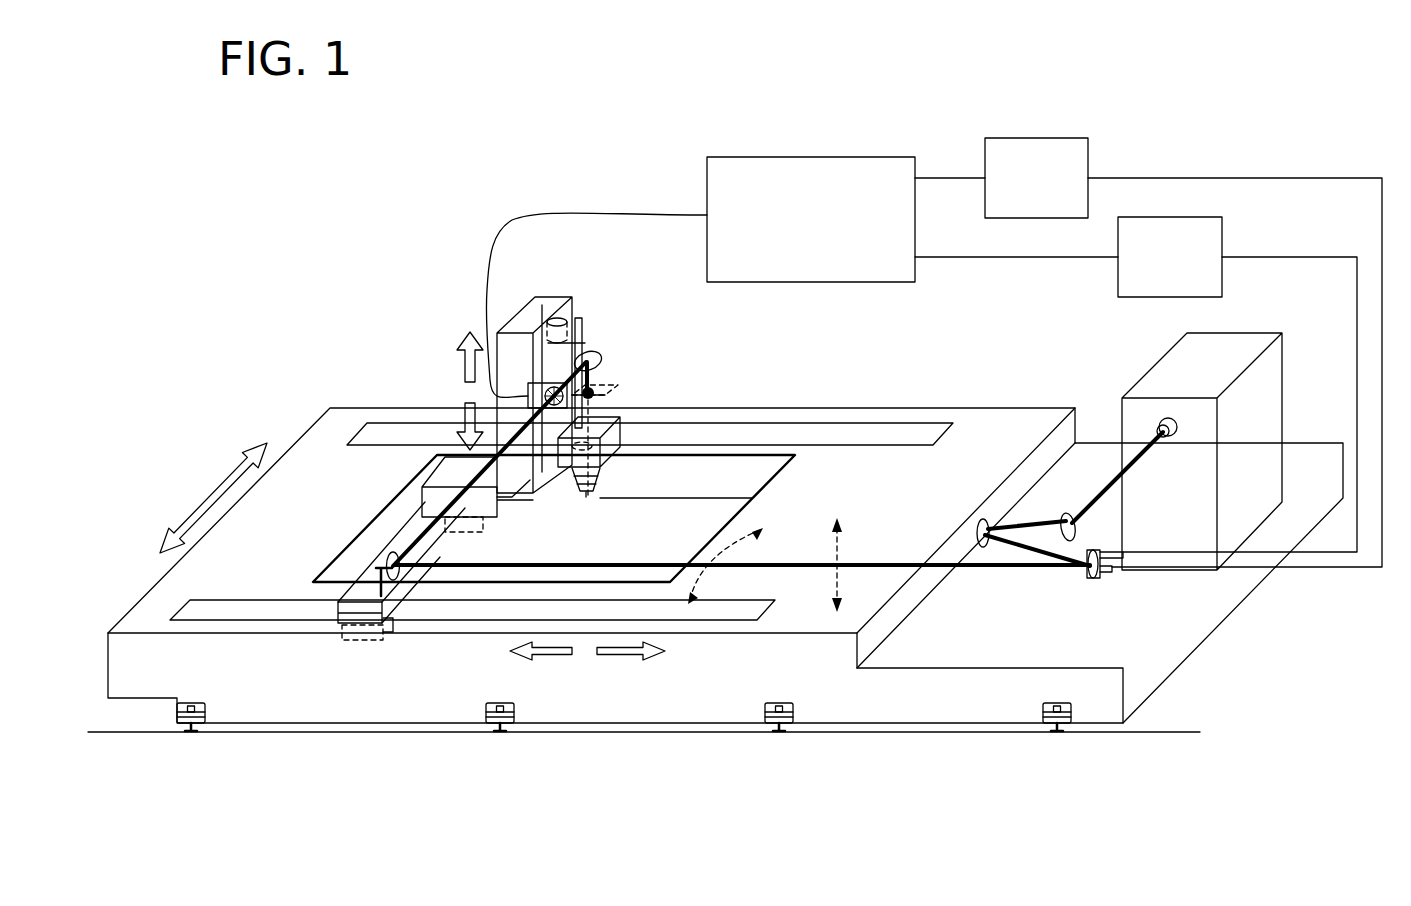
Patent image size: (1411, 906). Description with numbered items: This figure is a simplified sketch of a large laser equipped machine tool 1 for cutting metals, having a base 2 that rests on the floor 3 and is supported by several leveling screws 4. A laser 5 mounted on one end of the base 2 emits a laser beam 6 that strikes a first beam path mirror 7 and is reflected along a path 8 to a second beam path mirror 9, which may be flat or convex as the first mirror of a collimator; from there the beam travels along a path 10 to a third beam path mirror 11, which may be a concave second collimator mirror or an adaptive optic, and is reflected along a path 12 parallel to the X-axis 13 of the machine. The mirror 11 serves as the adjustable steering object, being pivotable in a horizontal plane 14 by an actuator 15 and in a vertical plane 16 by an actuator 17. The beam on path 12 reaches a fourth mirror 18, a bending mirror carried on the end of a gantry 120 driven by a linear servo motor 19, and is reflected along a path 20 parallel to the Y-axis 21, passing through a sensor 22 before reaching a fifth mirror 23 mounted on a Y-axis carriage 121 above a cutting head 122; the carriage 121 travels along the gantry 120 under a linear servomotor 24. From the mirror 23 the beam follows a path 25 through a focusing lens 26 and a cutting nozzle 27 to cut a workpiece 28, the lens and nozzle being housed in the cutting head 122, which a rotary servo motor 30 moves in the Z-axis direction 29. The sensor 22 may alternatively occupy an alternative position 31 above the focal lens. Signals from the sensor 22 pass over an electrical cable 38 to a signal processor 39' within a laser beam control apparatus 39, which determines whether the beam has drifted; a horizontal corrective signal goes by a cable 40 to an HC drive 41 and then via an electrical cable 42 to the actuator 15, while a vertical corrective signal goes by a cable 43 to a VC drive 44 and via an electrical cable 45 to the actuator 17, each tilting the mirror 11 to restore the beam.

The laser equipped machine tool 1 is at (283, 291).
The base 2 is at (231, 677).
The floor 3 is at (890, 776).
The leveling screws 4 is at (177, 718).
The laser 5 is at (1240, 427).
The laser beam 6 is at (1103, 492).
The first beam path mirror 7 is at (1080, 517).
The path 8 is at (1037, 526).
The second beam path mirror 9 is at (978, 524).
The path 10 is at (983, 556).
The third beam path mirror 11 is at (1092, 580).
The path 12 is at (1022, 570).
The X-axis 13 is at (632, 658).
The horizontal plane 14 is at (713, 573).
The actuator 15 is at (1093, 575).
The vertical plane 16 is at (833, 558).
The actuator 17 is at (1108, 553).
The fourth mirror 18 is at (397, 578).
The linear servo motor 19 is at (363, 640).
The path 20 is at (428, 522).
The Y-axis 21 is at (190, 522).
The sensor 22 is at (545, 297).
The fifth mirror 23 is at (590, 352).
The linear servomotor 24 is at (485, 520).
The path 25 is at (592, 388).
The focusing lens 26 is at (600, 420).
The cutting nozzle 27 is at (600, 490).
The workpiece 28 is at (648, 548).
The Z-axis direction 29 is at (463, 360).
The rotary servo motor 30 is at (580, 320).
The alternative position 31 is at (605, 392).
The electrical cable 38 is at (487, 288).
The laser beam control apparatus 39 is at (700, 199).
The signal processor 39' is at (665, 187).
The cable 40 is at (952, 178).
The HC drive 41 is at (1088, 147).
The electrical cable 42 is at (1238, 178).
The cable 43 is at (1015, 257).
The VC drive 44 is at (1222, 282).
The electrical cable 45 is at (1290, 257).
The gantry 120 is at (377, 577).
The Y-axis carriage 121 is at (556, 300).
The cutting head 122 is at (572, 468).